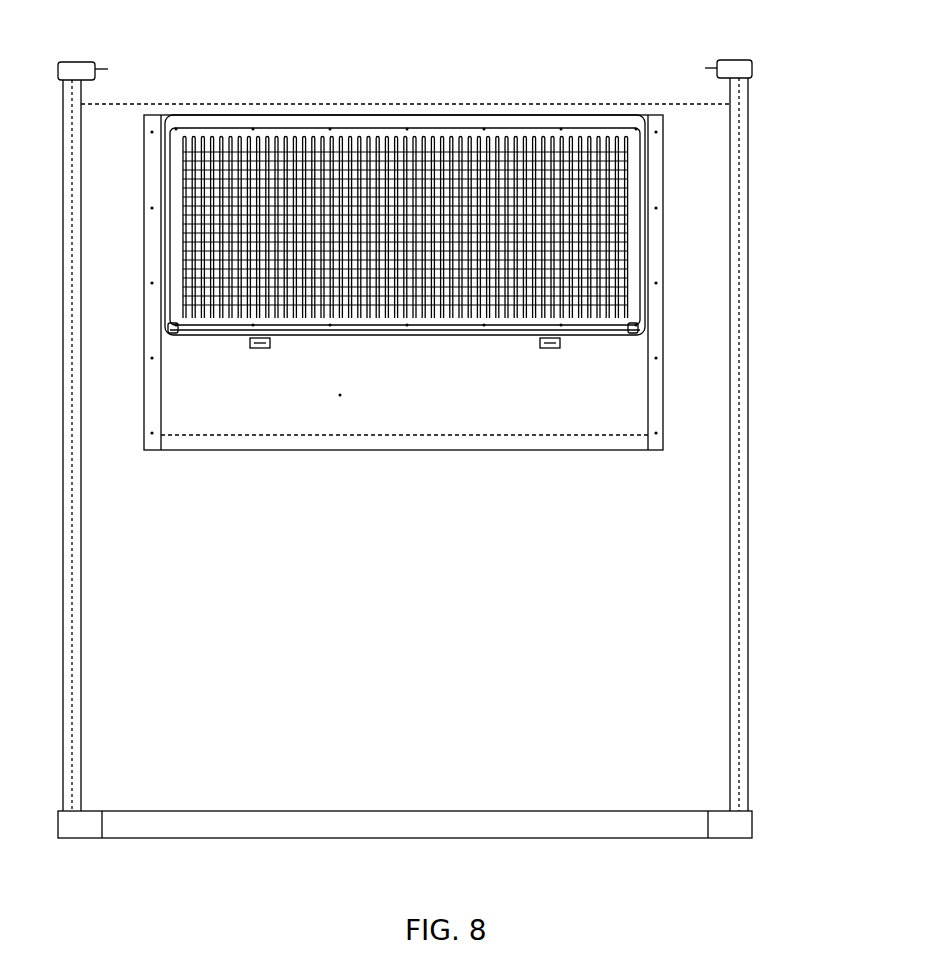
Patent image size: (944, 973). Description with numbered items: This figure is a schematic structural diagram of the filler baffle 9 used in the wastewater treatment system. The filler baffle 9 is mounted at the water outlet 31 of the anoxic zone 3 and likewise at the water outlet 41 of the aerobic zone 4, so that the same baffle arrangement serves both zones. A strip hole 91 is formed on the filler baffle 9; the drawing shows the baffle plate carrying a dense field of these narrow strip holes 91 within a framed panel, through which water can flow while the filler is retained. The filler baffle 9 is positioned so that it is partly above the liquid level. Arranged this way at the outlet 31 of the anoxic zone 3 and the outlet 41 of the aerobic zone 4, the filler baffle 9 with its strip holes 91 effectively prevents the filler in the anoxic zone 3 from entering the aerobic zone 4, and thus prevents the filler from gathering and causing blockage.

The anoxic zone 3 is at (456, 449).
The aerobic zone 4 is at (632, 543).
The water outlet of the anoxic zone 31 is at (405, 54).
The water outlet of the aerobic zone 41 is at (368, 104).
The filler baffle 9 is at (645, 312).
The strip hole 91 is at (630, 205).